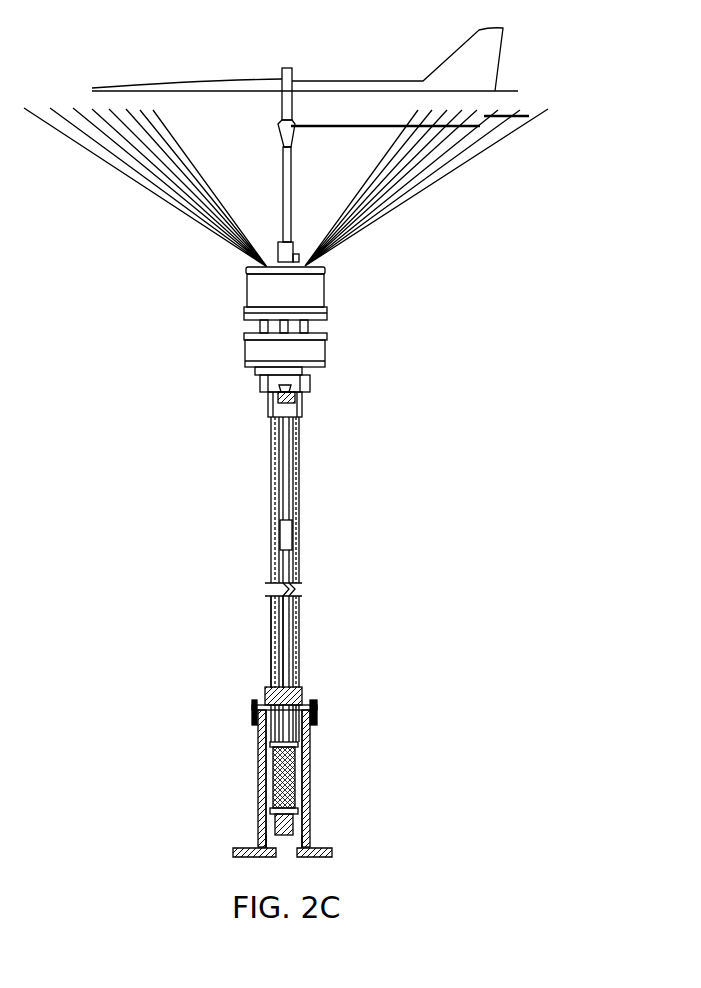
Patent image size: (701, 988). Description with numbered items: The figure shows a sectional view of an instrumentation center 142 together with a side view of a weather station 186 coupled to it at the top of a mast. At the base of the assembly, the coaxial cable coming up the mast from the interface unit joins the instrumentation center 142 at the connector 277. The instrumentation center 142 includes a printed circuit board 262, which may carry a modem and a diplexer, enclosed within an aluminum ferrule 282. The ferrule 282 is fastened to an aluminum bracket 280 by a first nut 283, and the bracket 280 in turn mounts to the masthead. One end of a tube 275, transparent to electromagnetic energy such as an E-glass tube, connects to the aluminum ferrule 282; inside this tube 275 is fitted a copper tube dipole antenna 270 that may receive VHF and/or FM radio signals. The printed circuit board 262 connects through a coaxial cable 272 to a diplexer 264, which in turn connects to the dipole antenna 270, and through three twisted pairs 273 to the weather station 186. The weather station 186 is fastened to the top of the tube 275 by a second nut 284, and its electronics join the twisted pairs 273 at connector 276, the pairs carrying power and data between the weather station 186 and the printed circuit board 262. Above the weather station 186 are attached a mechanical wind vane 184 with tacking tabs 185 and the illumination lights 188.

The instrumentation center 142 is at (217, 512).
The mechanical wind vane 184 is at (500, 60).
The tacking tabs 185 is at (490, 120).
The weather station 186 is at (327, 290).
The illumination lights 188 is at (428, 190).
The diplexer 264 is at (283, 537).
The dipole antenna 270 is at (272, 622).
The coaxial cable 272 is at (277, 672).
The three twisted pairs 273 is at (285, 478).
The tube 275 is at (300, 500).
The connector 276 is at (303, 405).
The connector 277 is at (310, 823).
The aluminum bracket 280 is at (310, 787).
The aluminum ferrule 282 is at (310, 735).
The first nut 283 is at (318, 700).
The second nut 284 is at (315, 388).
The printed circuit board 262 is at (310, 758).